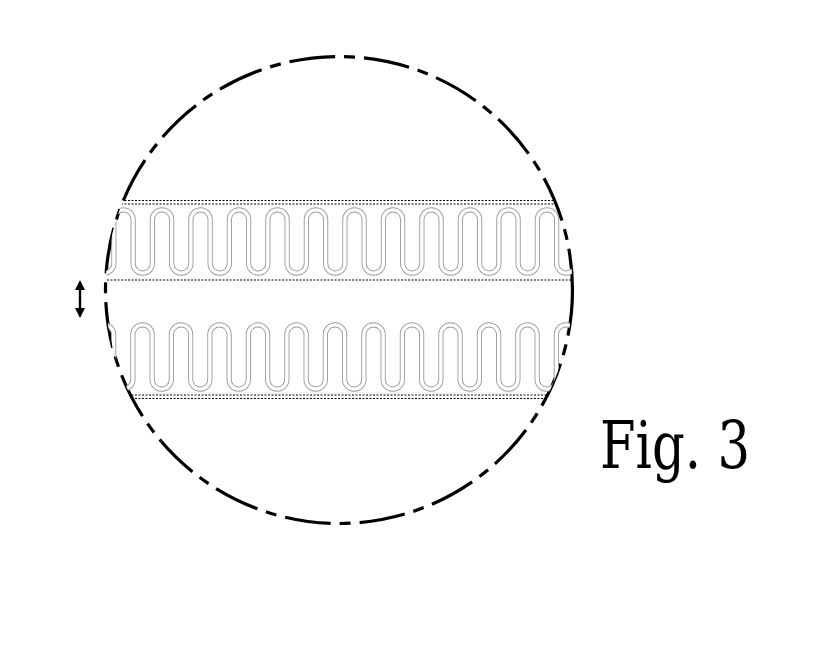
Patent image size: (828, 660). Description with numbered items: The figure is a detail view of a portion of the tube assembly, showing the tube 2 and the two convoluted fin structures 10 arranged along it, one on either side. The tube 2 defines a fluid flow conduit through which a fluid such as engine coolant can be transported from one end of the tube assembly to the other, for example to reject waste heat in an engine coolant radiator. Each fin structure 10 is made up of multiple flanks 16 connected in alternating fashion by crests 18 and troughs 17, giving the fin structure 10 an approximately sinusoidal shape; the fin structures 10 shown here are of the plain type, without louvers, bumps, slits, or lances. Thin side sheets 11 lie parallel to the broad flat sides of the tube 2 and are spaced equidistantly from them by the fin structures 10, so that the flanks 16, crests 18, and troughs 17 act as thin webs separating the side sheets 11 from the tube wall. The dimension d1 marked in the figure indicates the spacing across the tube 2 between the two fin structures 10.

The tube 2 is at (552, 305).
The convoluted fin structure 10 is at (525, 238).
The side sheet 11 is at (447, 203).
The flank 16 is at (308, 235).
The trough 17 is at (219, 278).
The crest 18 is at (356, 206).
The distance between tube rows d1 is at (64, 299).